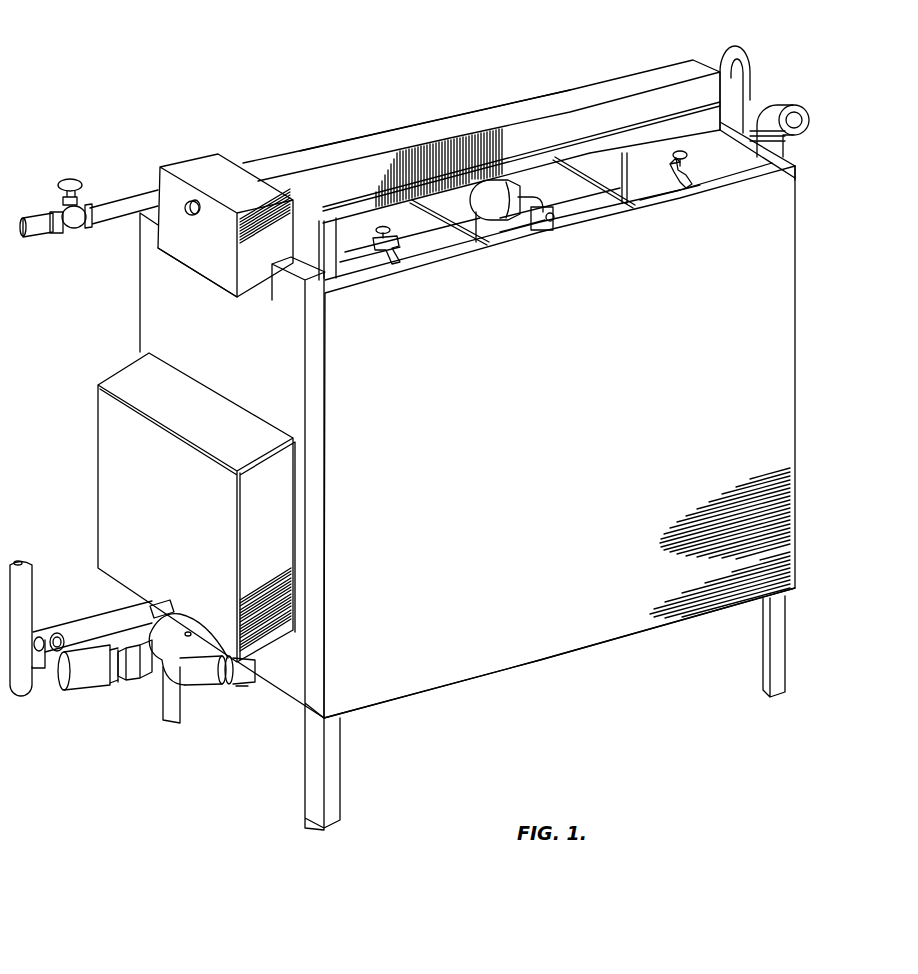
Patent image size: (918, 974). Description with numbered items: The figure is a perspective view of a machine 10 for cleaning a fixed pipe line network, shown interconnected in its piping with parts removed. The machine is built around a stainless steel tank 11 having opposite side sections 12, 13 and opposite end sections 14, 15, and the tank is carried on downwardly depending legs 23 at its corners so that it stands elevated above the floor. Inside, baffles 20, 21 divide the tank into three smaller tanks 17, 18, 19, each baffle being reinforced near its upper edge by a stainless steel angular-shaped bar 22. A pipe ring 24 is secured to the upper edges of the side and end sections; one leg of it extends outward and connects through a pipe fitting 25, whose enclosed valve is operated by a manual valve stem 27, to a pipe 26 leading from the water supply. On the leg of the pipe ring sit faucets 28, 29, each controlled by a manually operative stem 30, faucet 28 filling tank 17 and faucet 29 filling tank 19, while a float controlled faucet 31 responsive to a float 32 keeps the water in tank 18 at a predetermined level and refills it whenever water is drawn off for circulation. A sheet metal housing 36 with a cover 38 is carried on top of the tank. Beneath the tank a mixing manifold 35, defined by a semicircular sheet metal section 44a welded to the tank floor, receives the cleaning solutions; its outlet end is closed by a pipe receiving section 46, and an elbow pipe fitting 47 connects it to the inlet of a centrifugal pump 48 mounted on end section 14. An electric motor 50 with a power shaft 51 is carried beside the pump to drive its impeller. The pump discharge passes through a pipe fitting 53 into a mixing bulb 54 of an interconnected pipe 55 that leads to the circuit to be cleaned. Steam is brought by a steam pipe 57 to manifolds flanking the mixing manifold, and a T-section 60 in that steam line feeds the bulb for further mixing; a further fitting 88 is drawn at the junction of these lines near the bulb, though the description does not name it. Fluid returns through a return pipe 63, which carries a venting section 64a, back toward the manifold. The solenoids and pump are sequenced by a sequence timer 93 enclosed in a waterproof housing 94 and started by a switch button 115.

The machine 10 is at (509, 84).
The tank 11 is at (567, 658).
The side section 12 is at (559, 440).
The side section 13 is at (307, 230).
The end section 14 is at (232, 465).
The end section 15 is at (697, 140).
The tank 17 is at (366, 243).
The tank 18 is at (553, 176).
The tank 19 is at (662, 176).
The baffle 20 is at (441, 243).
The baffle 21 is at (588, 212).
The angular-shaped bar 22 is at (484, 240).
The legs 23 is at (335, 792).
The pipe ring 24 is at (804, 168).
The pipe fitting 25 is at (84, 210).
The pipe 26 is at (43, 230).
The valve stem 27 is at (60, 197).
The faucet 28 is at (375, 240).
The faucet 29 is at (678, 173).
The stem 30 is at (391, 232).
The float controlled faucet 31 is at (538, 228).
The float 32 is at (541, 199).
The mixing manifold 35 is at (244, 696).
The sheet metal housing 36 is at (604, 79).
The cover 38 is at (662, 78).
The sheet metal section 44a is at (250, 678).
The pipe receiving section 46 is at (228, 683).
The pipe fitting 47 is at (200, 682).
The pump 48 is at (185, 657).
The electric motor 50 is at (160, 622).
The power shaft 51 is at (189, 632).
The pipe fitting 53 is at (133, 675).
The mixing bulb 54 is at (87, 677).
The pipe 55 is at (24, 690).
The steam pipe 57 is at (80, 632).
The T-section 60 is at (50, 636).
The return pipe 63 is at (762, 135).
The venting section 64a is at (742, 85).
The pipe fitting 88 is at (45, 662).
The sequence timer 93 is at (210, 157).
The housing 94 is at (210, 258).
The switch button 115 is at (193, 215).